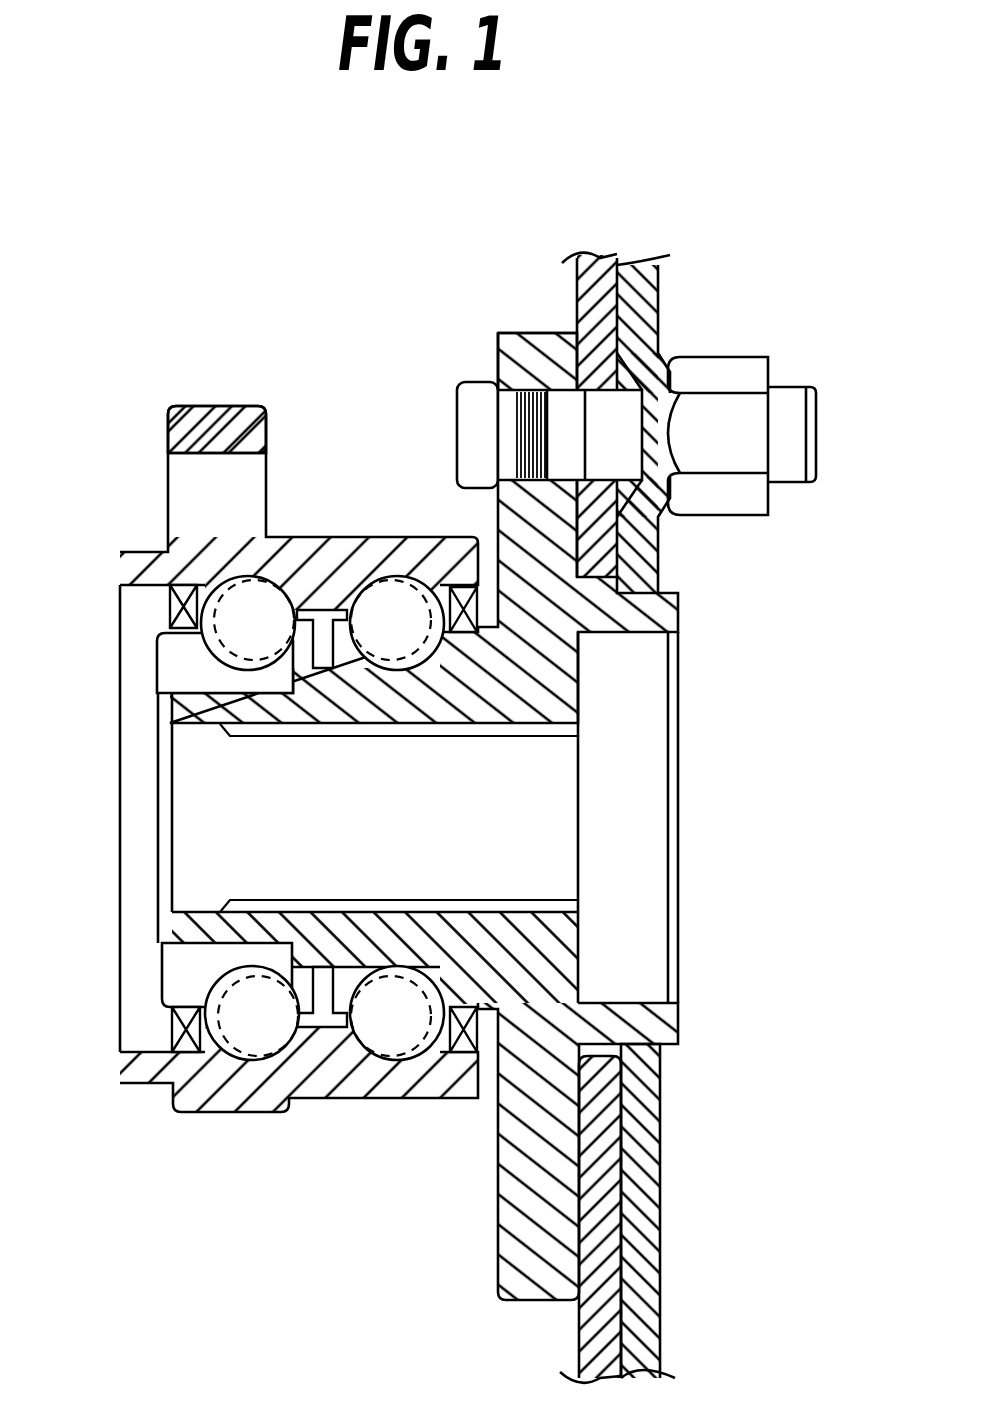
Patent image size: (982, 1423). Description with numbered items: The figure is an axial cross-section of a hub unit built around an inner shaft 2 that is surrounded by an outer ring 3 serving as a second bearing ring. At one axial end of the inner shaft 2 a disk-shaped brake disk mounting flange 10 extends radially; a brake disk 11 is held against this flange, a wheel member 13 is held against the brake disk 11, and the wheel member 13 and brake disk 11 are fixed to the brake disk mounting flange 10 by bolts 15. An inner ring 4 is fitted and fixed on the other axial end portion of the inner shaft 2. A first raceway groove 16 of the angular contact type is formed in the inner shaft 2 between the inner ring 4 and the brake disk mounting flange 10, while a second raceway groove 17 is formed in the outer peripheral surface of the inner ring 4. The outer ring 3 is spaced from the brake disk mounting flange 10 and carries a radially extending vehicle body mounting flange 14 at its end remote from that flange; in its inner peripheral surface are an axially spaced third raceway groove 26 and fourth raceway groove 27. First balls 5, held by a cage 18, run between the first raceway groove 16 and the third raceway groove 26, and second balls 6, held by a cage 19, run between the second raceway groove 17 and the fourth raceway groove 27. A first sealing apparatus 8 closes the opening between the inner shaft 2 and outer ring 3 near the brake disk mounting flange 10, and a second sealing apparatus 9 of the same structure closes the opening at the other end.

The inner shaft 2 is at (530, 693).
The outer ring 3 is at (318, 548).
The inner ring 4 is at (180, 662).
The first balls 5 is at (375, 1022).
The second balls 6 is at (220, 1043).
The first sealing apparatus 8 is at (597, 632).
The second sealing apparatus 9 is at (167, 606).
The brake disk mounting flange 10 is at (520, 365).
The brake disk 11 is at (584, 300).
The wheel member 13 is at (637, 302).
The vehicle body mounting flange 14 is at (222, 405).
The bolts 15 is at (787, 435).
The first raceway groove 16 is at (423, 1005).
The second raceway groove 17 is at (218, 594).
The cage 18 is at (402, 622).
The cage 19 is at (240, 674).
The third raceway groove 26 is at (375, 593).
The fourth raceway groove 27 is at (262, 1048).